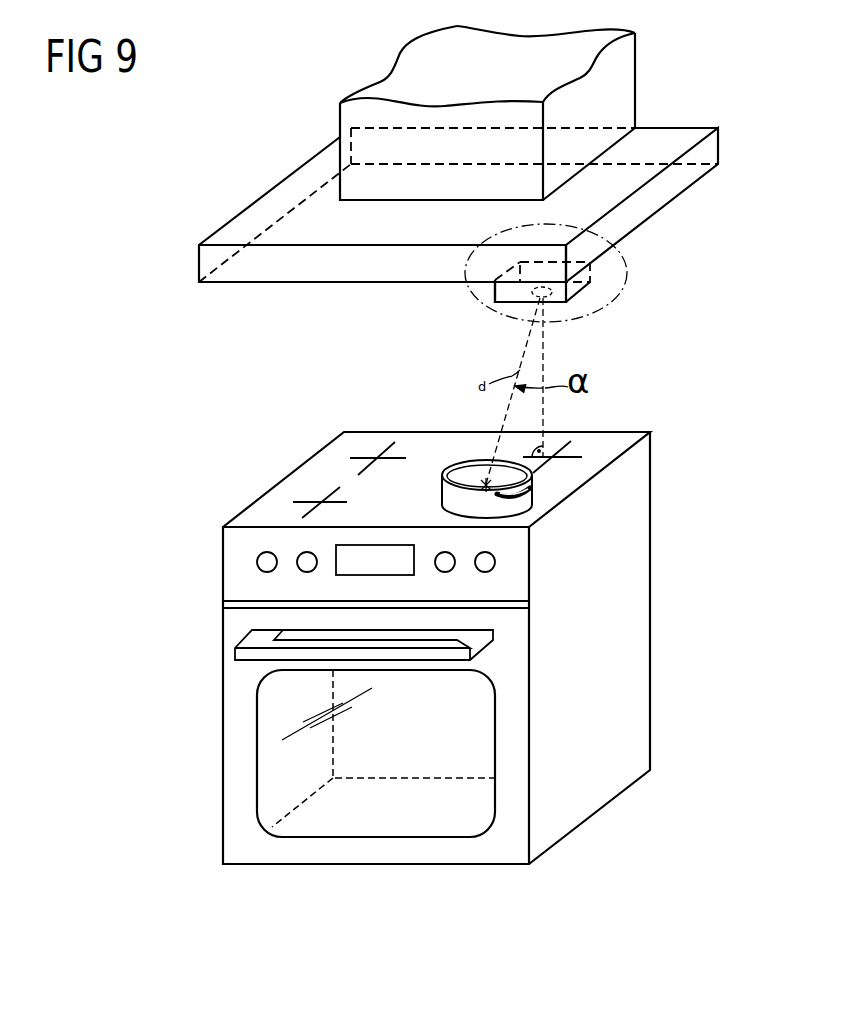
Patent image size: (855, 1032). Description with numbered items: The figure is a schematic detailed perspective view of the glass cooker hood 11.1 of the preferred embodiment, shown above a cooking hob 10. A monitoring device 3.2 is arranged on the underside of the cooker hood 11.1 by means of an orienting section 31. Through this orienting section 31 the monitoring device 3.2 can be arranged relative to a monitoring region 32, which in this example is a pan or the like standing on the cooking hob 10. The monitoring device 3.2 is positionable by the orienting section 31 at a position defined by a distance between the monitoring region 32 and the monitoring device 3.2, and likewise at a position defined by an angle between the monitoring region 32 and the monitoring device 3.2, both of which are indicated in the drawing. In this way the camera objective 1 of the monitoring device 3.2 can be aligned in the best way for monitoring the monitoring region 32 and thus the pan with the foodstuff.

The cooker hood 11.1 is at (627, 178).
The camera objective 1 is at (570, 287).
The monitoring device 3.2 is at (495, 288).
The orienting section 31 is at (525, 312).
The monitoring region 32 is at (470, 479).
The cooking hob 10 is at (628, 603).